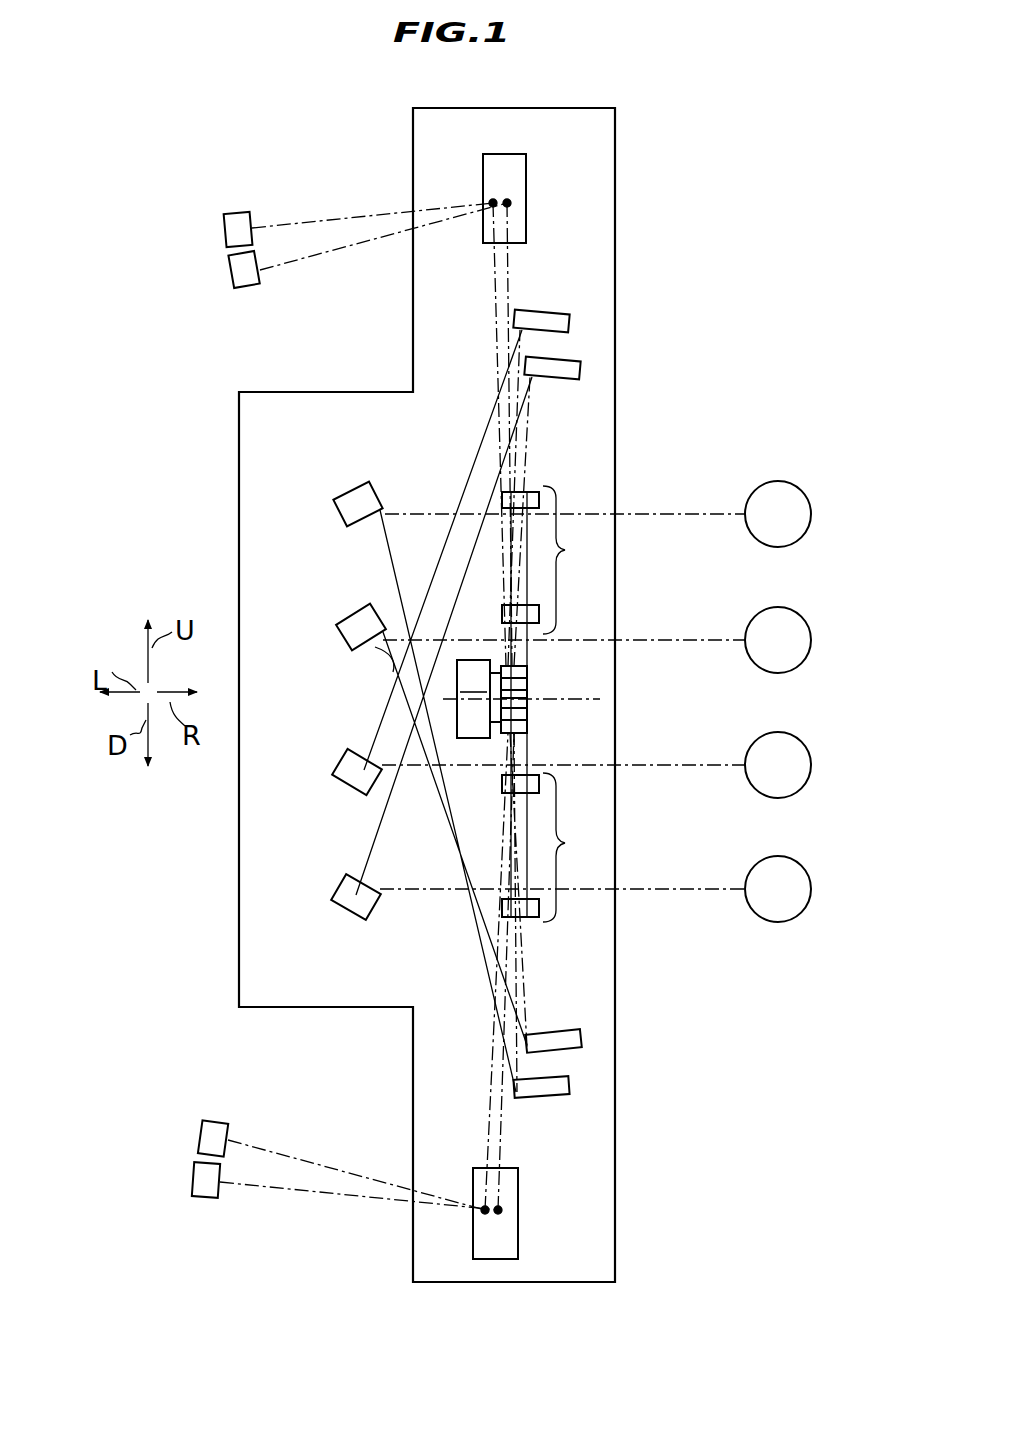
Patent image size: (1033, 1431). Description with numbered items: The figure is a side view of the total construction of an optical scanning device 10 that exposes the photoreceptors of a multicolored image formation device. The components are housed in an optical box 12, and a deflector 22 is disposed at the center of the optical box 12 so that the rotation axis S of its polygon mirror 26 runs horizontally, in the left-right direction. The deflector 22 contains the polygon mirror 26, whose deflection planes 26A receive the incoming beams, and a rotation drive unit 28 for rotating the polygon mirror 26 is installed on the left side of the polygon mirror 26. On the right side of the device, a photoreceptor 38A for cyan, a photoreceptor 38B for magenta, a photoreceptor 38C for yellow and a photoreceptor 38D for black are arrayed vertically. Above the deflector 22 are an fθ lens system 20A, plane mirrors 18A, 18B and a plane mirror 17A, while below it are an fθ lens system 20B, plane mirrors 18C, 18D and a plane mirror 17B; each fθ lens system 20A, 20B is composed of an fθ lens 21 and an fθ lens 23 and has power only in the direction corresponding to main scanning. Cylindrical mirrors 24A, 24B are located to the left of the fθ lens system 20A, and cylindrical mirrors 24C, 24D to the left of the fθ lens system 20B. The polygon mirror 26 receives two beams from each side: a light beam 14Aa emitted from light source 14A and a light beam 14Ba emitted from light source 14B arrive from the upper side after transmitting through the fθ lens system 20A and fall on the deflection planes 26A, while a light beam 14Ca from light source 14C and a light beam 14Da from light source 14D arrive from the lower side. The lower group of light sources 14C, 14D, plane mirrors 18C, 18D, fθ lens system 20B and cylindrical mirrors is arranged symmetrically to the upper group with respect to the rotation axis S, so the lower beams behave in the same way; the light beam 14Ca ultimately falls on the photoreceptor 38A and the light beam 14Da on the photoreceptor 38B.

The optical scanning device 10 is at (618, 142).
The optical box 12 is at (428, 108).
The light source 14A is at (224, 234).
The light source 14B is at (230, 272).
The light source 14C is at (202, 1138).
The light source 14D is at (195, 1182).
The light beam 14Aa is at (302, 218).
The light beam 14Ba is at (335, 260).
The light beam 14Ca is at (334, 1165).
The light beam 14Da is at (358, 1198).
The plane mirror 17A is at (527, 228).
The plane mirror 17B is at (519, 1230).
The plane mirror 18A is at (570, 326).
The plane mirror 18B is at (581, 370).
The plane mirror 18C is at (582, 1035).
The plane mirror 18D is at (571, 1085).
The fθ lens system 20A is at (566, 550).
The fθ lens system 20B is at (566, 843).
The fθ lens 21 is at (540, 606).
The deflector 22 is at (528, 736).
The fθ lens 23 is at (540, 492).
The cylindrical mirror 24A is at (338, 496).
The cylindrical mirror 24B is at (350, 625).
The cylindrical mirror 24C is at (342, 760).
The cylindrical mirror 24D is at (343, 885).
The polygon mirror 26 is at (528, 672).
The deflection plane 26A is at (528, 690).
The rotation drive unit 28 is at (479, 699).
The photoreceptor 38A is at (755, 490).
The photoreceptor 38B is at (756, 616).
The photoreceptor 38C is at (755, 790).
The photoreceptor 38D is at (755, 920).
The rotation axis S is at (600, 705).